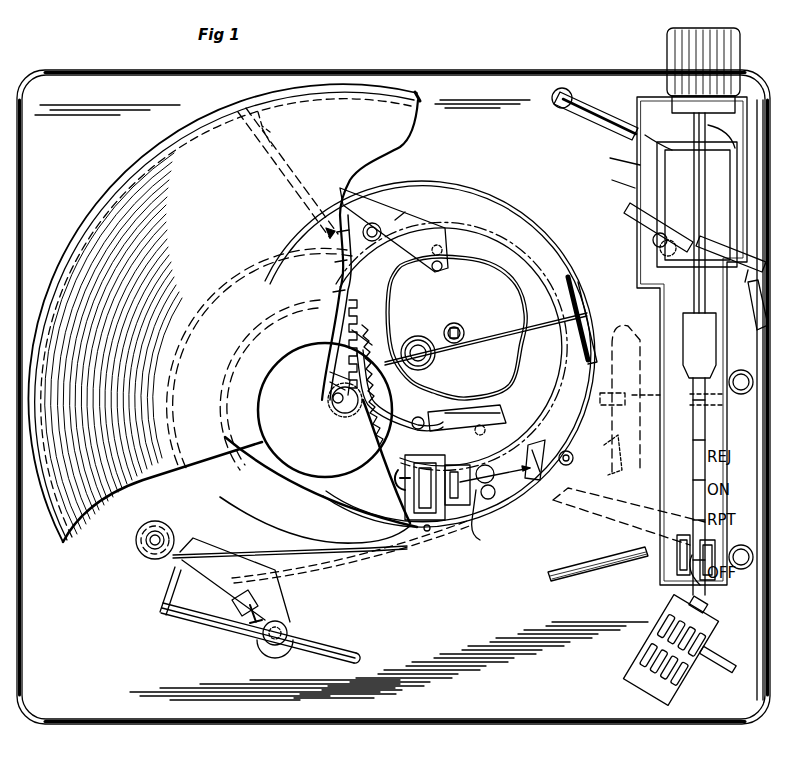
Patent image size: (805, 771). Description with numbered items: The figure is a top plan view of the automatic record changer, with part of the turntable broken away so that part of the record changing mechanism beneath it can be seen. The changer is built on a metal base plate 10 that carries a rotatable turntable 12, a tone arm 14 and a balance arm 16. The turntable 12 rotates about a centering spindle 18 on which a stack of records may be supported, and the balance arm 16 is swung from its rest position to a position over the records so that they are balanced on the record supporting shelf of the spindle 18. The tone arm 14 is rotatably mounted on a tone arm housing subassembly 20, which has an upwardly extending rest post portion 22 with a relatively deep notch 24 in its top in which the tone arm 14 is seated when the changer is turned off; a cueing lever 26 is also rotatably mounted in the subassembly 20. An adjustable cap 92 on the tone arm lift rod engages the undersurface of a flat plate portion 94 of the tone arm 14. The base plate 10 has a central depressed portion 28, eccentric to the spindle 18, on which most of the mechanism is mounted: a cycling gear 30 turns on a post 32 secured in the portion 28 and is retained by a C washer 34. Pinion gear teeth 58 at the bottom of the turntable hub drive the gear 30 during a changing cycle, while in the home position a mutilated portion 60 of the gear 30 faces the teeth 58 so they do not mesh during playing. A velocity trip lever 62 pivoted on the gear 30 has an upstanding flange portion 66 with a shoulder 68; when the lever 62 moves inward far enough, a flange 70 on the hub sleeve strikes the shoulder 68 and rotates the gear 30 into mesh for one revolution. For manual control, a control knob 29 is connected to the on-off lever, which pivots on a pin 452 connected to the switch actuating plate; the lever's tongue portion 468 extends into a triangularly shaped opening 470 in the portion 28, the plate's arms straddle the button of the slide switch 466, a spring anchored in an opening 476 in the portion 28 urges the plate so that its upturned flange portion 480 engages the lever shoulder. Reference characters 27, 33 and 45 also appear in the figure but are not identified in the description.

The base plate 10 is at (470, 80).
The turntable 12 is at (135, 155).
The tone arm 14 is at (712, 448).
The balance arm 16 is at (592, 100).
The centering spindle 18 is at (335, 400).
The tone arm housing subassembly 20 is at (752, 180).
The rest post portion 22 is at (680, 560).
The notch 24 is at (702, 580).
The cueing lever 26 is at (766, 318).
The mounting grommet 27 is at (754, 382).
The central depressed portion 28 is at (500, 215).
The control knob 29 is at (754, 552).
The cycling gear 30 is at (345, 295).
The post 32 is at (462, 330).
The position mark 33 is at (708, 385).
The C washer 34 is at (425, 338).
The position mark 45 is at (708, 409).
The pinion gear teeth 58 is at (352, 408).
The mutilated portion 60 is at (340, 372).
The velocity trip lever 62 is at (436, 428).
The upstanding flange portion 66 is at (372, 380).
The shoulder 68 is at (370, 350).
The flange 70 is at (335, 383).
The adjustable cap 92 is at (645, 215).
The flat plate portion 94 is at (752, 152).
The pin 452 is at (492, 522).
The slide switch 466 is at (427, 532).
The tongue portion 468 is at (515, 497).
The triangularly shaped opening 470 is at (560, 428).
The opening 476 is at (560, 452).
The upturned flange portion 480 is at (455, 510).